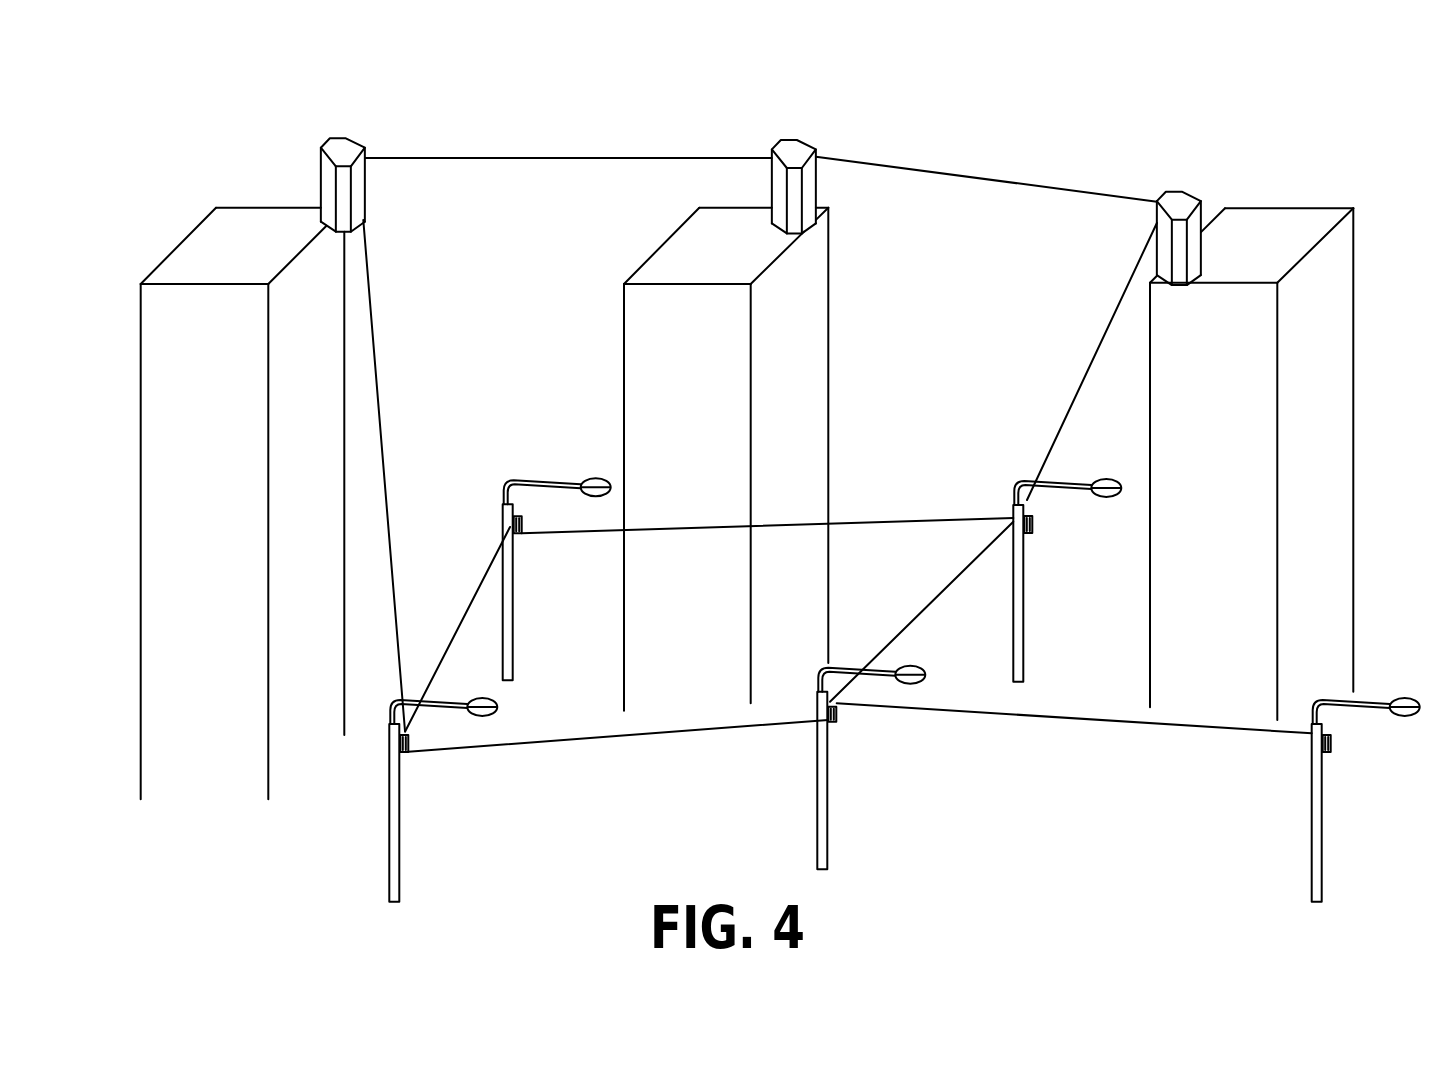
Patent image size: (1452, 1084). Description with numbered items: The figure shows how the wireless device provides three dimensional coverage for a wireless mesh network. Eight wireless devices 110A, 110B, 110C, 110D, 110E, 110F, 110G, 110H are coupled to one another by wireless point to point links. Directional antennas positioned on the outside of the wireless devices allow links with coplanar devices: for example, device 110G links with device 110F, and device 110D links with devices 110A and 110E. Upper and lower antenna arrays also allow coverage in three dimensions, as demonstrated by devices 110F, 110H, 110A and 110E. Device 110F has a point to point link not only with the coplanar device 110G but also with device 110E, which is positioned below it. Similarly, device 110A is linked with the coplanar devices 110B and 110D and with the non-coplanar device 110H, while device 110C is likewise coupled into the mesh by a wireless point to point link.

The wireless device 110A is at (1031, 481).
The wireless device 110B is at (833, 722).
The wireless device 110C is at (1327, 752).
The wireless device 110D is at (518, 480).
The wireless device 110E is at (403, 753).
The wireless device 110F is at (348, 138).
The wireless device 110G is at (793, 150).
The wireless device 110H is at (1170, 205).